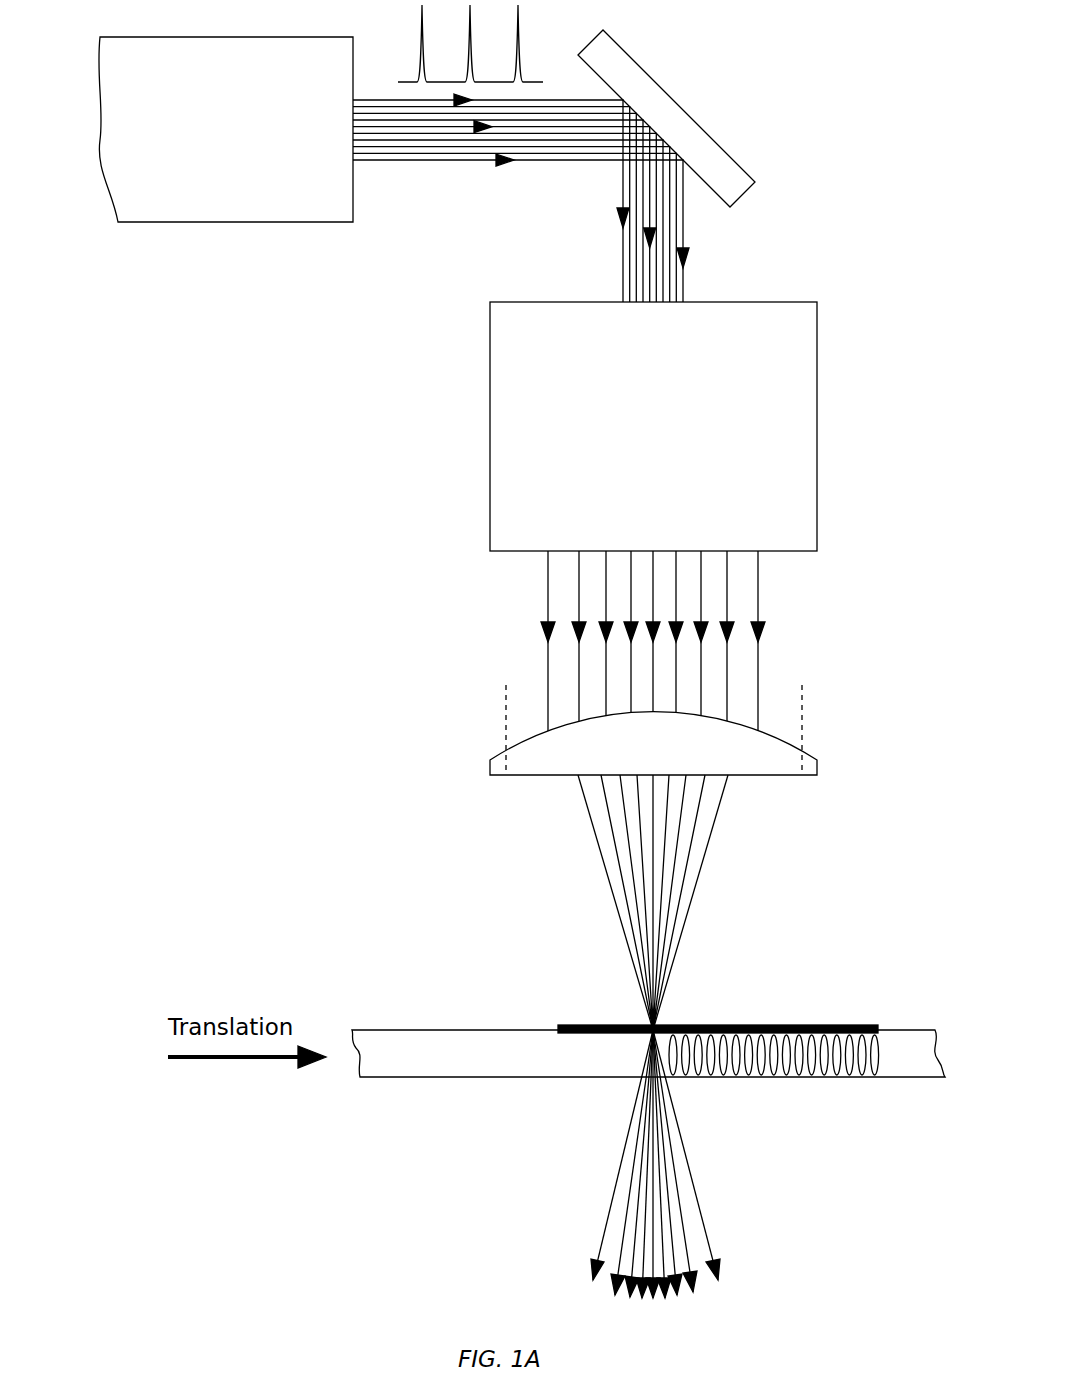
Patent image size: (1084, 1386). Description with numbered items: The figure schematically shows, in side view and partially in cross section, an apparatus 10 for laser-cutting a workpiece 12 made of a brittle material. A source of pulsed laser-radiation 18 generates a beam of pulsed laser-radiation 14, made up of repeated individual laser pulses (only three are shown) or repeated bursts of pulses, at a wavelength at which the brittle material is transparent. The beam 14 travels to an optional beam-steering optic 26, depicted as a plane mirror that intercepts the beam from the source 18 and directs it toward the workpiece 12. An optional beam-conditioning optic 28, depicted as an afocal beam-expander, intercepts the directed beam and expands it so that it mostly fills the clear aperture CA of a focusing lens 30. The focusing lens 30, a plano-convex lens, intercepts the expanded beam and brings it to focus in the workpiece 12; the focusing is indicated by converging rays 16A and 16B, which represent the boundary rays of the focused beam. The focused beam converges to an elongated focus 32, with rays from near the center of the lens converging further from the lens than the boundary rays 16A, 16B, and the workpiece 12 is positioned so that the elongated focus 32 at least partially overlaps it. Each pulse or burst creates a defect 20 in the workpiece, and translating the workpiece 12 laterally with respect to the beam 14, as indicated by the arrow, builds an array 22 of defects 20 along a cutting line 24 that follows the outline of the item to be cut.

The apparatus 10 is at (228, 1168).
The workpiece 12 is at (435, 1030).
The beam of pulsed laser-radiation 14 is at (455, 168).
The converging ray 16A is at (620, 937).
The converging ray 16B is at (690, 935).
The source of pulsed laser-radiation 18 is at (165, 217).
The defect 20 is at (850, 1078).
The array of defects 22 is at (770, 1092).
The cutting line 24 is at (818, 1025).
The beam-steering optic 26 is at (695, 130).
The beam-conditioning optic 28 is at (810, 400).
The focusing lens 30 is at (813, 757).
The elongated focus 32 is at (650, 1050).
The clear aperture CA is at (868, 703).